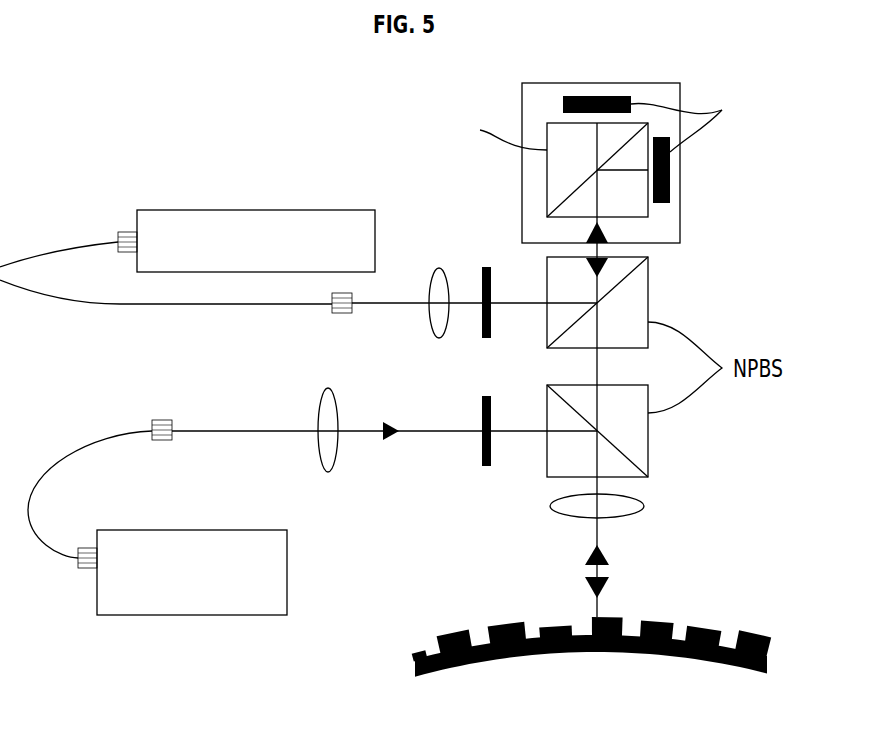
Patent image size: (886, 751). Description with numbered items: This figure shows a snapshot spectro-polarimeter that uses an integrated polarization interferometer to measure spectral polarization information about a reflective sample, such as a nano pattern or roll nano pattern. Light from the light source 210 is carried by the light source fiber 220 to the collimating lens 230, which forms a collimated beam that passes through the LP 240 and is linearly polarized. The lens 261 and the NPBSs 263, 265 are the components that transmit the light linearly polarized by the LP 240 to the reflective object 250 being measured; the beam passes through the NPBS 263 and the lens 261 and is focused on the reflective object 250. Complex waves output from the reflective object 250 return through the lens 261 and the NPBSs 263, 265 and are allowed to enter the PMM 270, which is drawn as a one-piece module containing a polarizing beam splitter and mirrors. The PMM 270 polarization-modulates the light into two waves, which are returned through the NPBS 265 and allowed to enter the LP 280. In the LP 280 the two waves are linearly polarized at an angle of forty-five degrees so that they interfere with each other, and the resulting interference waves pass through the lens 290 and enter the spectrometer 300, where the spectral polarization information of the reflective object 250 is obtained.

The light source 210 is at (192, 615).
The light source fiber 220 is at (109, 461).
The collimating lens 230 is at (318, 440).
The LP 240 is at (485, 466).
The reflective object 250 is at (712, 623).
The lens 261 is at (643, 506).
The NPBS 263 is at (648, 452).
The NPBS 265 is at (648, 282).
The PMM 270 is at (680, 200).
The LP 280 is at (487, 267).
The lens 290 is at (428, 325).
The spectrometer 300 is at (257, 210).